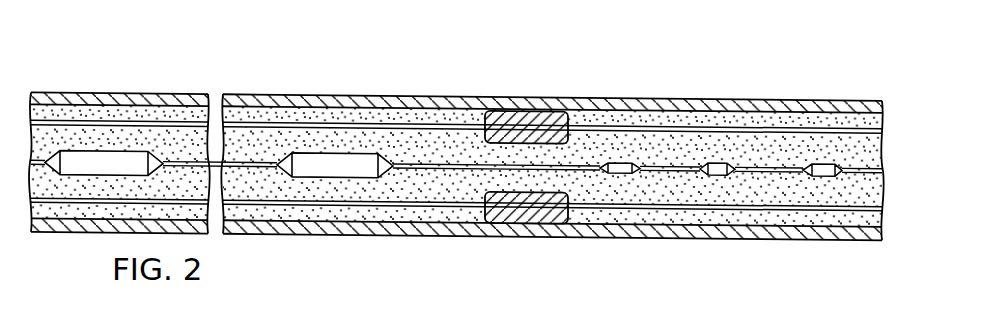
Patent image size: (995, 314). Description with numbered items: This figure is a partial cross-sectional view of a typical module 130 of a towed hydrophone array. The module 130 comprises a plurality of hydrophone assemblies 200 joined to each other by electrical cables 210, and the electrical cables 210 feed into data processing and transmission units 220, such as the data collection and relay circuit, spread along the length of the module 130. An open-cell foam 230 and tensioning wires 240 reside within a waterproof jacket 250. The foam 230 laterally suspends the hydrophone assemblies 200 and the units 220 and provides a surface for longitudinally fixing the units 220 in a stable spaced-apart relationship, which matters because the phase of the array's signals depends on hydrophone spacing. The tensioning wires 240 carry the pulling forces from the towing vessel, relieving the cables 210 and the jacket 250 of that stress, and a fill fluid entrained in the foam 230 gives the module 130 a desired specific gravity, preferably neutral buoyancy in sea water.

The module 130 is at (547, 248).
The hydrophone assemblies 200 is at (603, 163).
The electrical cables 210 is at (667, 166).
The data processing and transmission units 220 is at (107, 151).
The open-cell foam 230 is at (147, 130).
The tensioning wires 240 is at (390, 125).
The waterproof jacket 250 is at (187, 93).